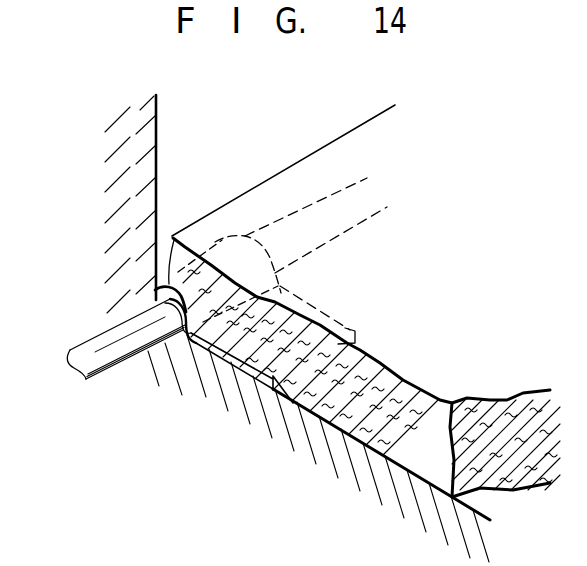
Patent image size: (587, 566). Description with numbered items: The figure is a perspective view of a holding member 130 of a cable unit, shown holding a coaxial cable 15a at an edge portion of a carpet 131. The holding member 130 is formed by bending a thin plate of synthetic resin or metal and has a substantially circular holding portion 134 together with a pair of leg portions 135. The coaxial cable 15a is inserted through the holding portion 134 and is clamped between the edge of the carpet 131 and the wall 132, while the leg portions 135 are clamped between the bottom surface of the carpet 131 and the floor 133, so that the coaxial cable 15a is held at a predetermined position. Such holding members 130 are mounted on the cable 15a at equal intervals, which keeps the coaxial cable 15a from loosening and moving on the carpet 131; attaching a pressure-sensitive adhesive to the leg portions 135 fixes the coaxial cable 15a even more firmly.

The wall 132 is at (157, 155).
The holding portion 134 is at (164, 283).
The carpet 131 is at (447, 270).
The coaxial cable 15a is at (97, 342).
The holding member 130 is at (146, 382).
The leg portions 135 is at (250, 373).
The floor 133 is at (468, 522).